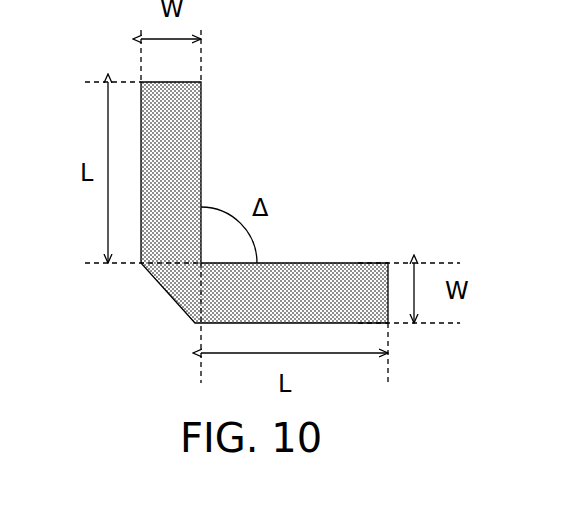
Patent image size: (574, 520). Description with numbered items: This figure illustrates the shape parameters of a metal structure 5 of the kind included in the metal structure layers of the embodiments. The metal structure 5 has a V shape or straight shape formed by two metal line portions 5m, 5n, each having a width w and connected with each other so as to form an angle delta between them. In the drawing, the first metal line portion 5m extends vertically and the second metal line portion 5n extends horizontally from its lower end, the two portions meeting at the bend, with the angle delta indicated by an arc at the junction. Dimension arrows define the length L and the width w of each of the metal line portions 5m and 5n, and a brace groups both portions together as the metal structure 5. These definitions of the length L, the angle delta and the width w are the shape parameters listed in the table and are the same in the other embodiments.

The metal structure 5 is at (387, 173).
The metal line portion 5m is at (201, 128).
The metal line portion 5n is at (313, 263).